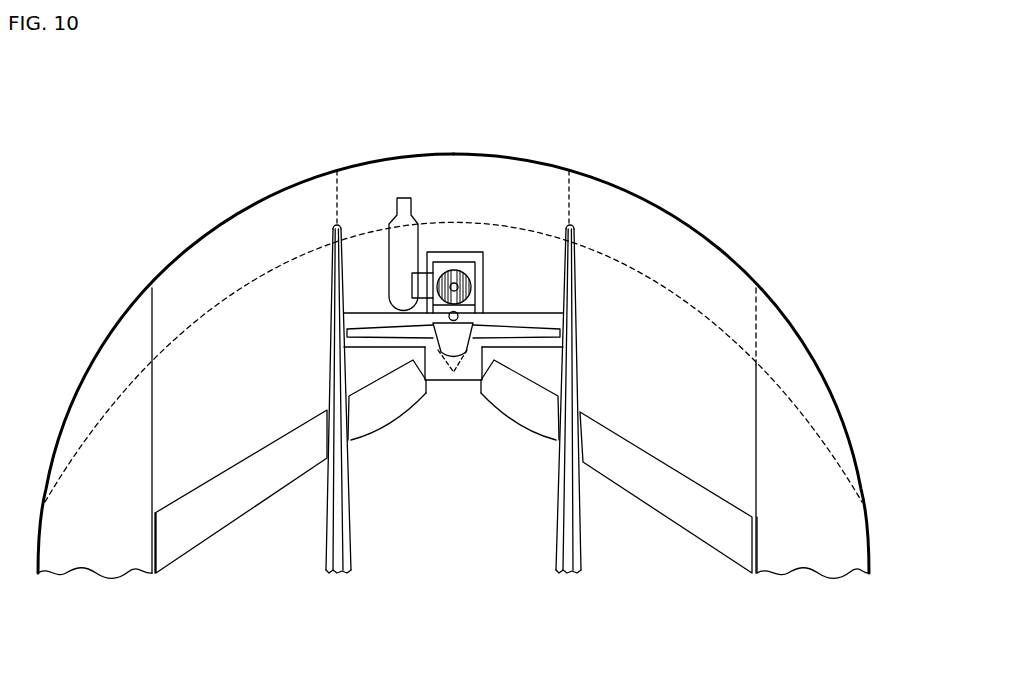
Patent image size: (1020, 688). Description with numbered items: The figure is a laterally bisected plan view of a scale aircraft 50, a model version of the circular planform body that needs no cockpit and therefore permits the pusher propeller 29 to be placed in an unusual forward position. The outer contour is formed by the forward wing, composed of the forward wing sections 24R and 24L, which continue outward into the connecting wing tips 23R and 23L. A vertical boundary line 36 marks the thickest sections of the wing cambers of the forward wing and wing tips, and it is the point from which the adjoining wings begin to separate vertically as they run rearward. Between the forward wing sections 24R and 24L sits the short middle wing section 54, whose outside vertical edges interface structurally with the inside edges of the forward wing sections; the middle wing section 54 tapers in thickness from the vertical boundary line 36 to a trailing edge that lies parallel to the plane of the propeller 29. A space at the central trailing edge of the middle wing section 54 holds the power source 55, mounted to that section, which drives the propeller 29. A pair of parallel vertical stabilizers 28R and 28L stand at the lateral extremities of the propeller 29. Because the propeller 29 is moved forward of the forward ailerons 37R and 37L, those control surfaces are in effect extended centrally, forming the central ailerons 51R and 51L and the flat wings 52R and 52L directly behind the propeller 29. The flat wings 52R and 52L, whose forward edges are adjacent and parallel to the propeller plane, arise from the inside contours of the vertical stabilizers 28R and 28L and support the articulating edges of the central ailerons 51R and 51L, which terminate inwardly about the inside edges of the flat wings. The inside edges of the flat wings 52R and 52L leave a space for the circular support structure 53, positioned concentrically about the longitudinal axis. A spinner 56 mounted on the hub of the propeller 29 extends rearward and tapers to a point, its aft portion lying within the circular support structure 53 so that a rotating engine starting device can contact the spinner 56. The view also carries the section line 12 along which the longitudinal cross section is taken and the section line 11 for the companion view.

The scale aircraft 50 is at (737, 184).
The left forward wing section 24L is at (270, 210).
The right forward wing section 24R is at (625, 217).
The left wing tip 23L is at (118, 340).
The right wing tip 23R is at (795, 337).
The vertical boundary line 36 is at (688, 300).
The left forward aileron 37L is at (232, 507).
The right forward aileron 37R is at (673, 510).
The left vertical stabilizer 28L is at (343, 523).
The right vertical stabilizer 28R is at (564, 523).
The middle wing section 54 is at (348, 183).
The power source 55 is at (460, 262).
The pusher propeller 29 is at (480, 332).
The spinner 56 is at (465, 350).
The circular support structure 53 is at (440, 372).
The left flat wing 52L is at (357, 370).
The right flat wing 52R is at (550, 370).
The left central aileron 51L is at (360, 425).
The right central aileron 51R is at (548, 425).
The section line 12— 12 is at (523, 128).
The section line 11— 11 is at (597, 635).